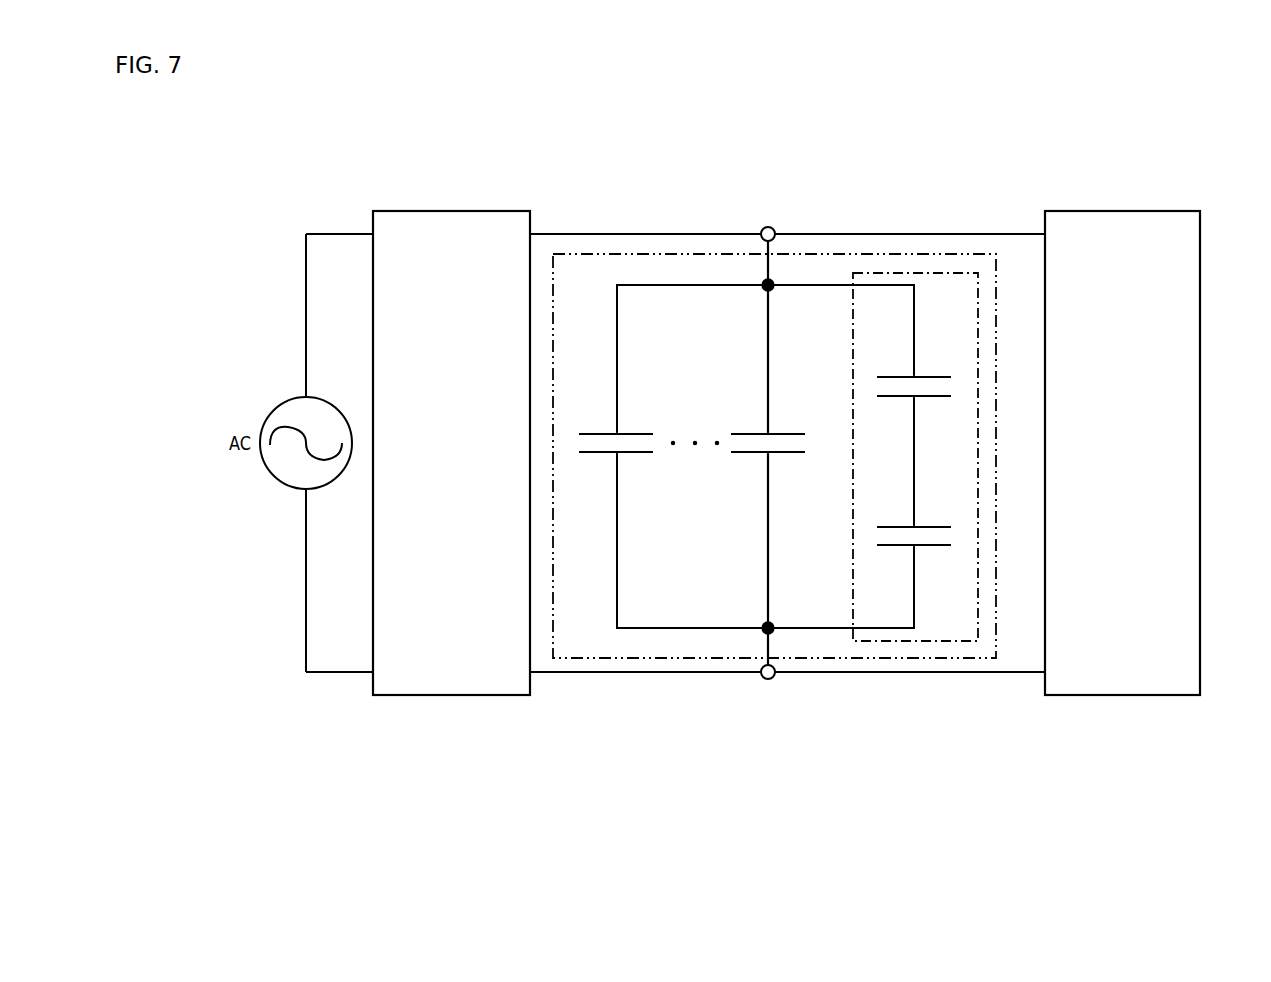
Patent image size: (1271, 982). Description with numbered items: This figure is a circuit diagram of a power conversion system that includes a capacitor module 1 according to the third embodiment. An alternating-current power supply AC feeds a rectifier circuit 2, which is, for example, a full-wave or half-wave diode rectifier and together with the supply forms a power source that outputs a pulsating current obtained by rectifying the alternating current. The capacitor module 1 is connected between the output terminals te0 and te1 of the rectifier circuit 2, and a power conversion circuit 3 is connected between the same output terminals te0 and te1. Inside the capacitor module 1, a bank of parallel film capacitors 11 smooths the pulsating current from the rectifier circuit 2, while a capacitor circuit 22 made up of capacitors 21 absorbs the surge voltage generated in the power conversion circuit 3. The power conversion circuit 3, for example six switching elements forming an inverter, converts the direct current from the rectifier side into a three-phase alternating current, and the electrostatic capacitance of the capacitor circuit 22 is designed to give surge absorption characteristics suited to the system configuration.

The capacitor module 1 is at (678, 253).
The rectifier circuit 2 is at (440, 211).
The power conversion circuit 3 is at (1152, 211).
The film capacitor 11 is at (692, 425).
The capacitor 21 is at (914, 444).
The capacitor circuit 22 is at (950, 272).
The output terminal te1 is at (773, 229).
The output terminal te0 is at (766, 681).